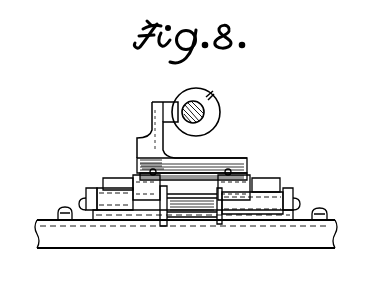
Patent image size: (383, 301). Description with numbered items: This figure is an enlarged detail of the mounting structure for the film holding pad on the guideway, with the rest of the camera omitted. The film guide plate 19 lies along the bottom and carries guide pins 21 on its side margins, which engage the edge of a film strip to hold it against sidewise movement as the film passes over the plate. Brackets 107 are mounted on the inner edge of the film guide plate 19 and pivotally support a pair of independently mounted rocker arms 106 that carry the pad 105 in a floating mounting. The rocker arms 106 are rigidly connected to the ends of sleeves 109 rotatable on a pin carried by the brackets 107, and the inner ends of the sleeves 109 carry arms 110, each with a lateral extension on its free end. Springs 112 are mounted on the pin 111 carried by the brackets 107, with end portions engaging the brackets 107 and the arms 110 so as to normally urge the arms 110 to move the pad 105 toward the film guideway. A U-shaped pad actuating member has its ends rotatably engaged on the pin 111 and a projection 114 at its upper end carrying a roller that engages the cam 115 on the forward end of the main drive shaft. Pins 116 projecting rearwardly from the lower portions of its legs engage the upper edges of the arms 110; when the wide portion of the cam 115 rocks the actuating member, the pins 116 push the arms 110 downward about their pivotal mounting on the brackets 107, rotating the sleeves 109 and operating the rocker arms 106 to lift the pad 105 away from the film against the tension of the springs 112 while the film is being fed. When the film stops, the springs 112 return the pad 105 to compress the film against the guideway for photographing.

The film guide plate 19 is at (223, 238).
The guide pins 21 is at (57, 210).
The pad 105 is at (268, 185).
The rocker arms 106 is at (93, 192).
The brackets 107 is at (95, 216).
The sleeves 109 is at (118, 204).
The arms 110 is at (144, 178).
The pin 111 is at (193, 198).
The springs 112 is at (219, 214).
The projection 114 is at (157, 126).
The cam 115 is at (213, 111).
The pins 116 is at (152, 170).